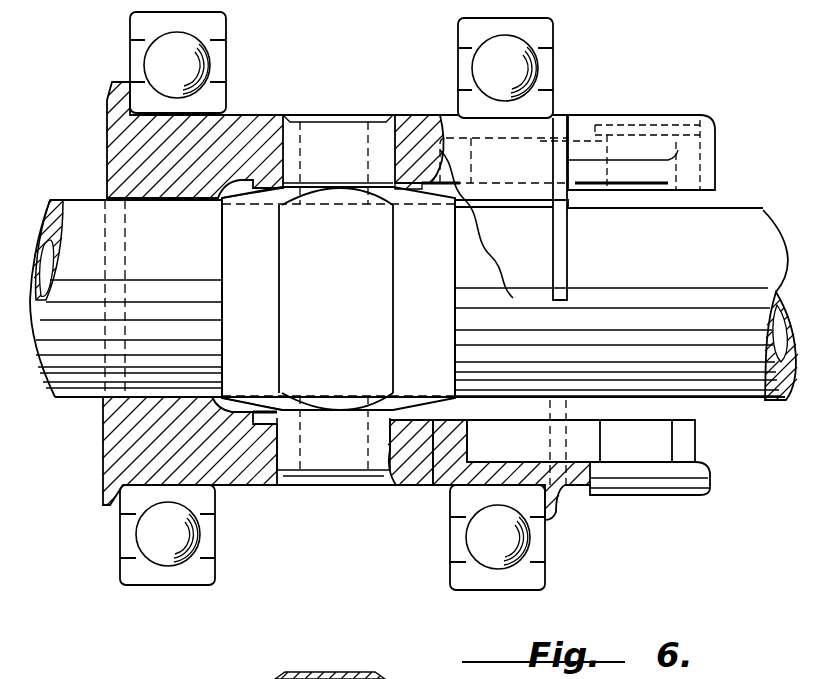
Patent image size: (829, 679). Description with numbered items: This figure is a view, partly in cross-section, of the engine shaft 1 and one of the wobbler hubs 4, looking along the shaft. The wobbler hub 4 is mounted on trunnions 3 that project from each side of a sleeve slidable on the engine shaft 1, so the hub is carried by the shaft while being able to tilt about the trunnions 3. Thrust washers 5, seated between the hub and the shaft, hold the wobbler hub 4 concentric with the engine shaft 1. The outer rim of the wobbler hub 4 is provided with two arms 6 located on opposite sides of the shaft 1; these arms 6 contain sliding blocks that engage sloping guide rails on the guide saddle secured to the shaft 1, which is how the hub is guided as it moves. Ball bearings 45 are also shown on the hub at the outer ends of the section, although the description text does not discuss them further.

The engine shaft 1 is at (762, 228).
The trunnions 3 is at (337, 458).
The wobbler hub 4 is at (237, 472).
The thrust washers 5 is at (420, 130).
The arms 6 is at (712, 135).
The ball bearing 45 is at (148, 58).